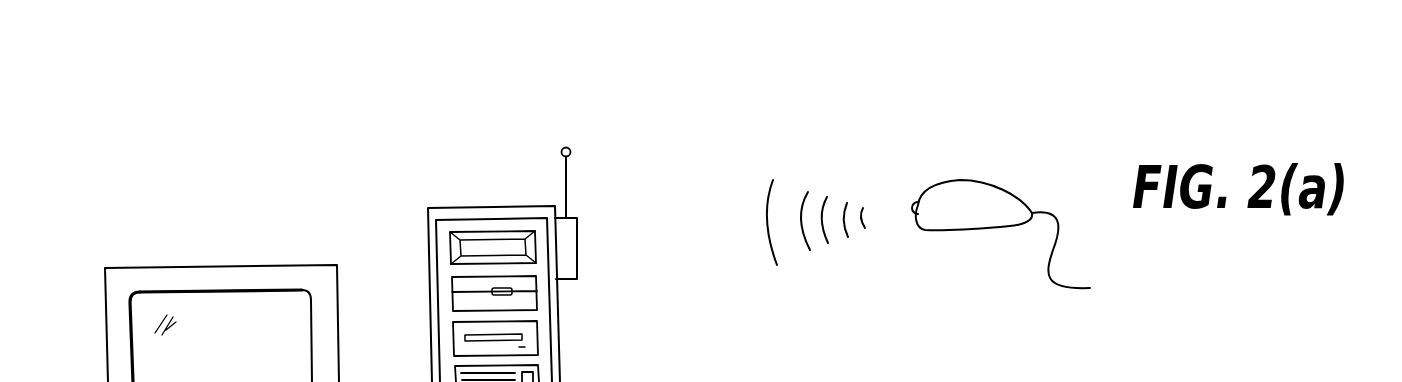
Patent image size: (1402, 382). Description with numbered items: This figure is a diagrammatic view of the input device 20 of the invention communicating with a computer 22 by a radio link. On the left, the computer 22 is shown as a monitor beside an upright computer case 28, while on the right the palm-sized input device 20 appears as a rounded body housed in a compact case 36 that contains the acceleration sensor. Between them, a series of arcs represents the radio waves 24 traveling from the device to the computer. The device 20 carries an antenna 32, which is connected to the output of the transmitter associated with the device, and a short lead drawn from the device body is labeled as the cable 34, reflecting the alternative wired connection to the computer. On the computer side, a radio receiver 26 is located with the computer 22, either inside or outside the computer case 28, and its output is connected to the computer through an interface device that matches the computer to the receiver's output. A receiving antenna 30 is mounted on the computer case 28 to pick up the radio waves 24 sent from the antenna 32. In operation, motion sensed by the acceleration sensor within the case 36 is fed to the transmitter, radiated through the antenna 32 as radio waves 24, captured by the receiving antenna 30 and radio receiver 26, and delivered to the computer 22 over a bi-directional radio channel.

The input device 20 is at (1025, 185).
The computer 22 is at (330, 187).
The radio waves 24 is at (835, 162).
The radio receiver 26 is at (568, 240).
The computer case 28 is at (562, 353).
The receiving antenna 30 is at (570, 149).
The antenna 32 is at (912, 202).
The cable 34 is at (863, 372).
The case 36 is at (1079, 255).